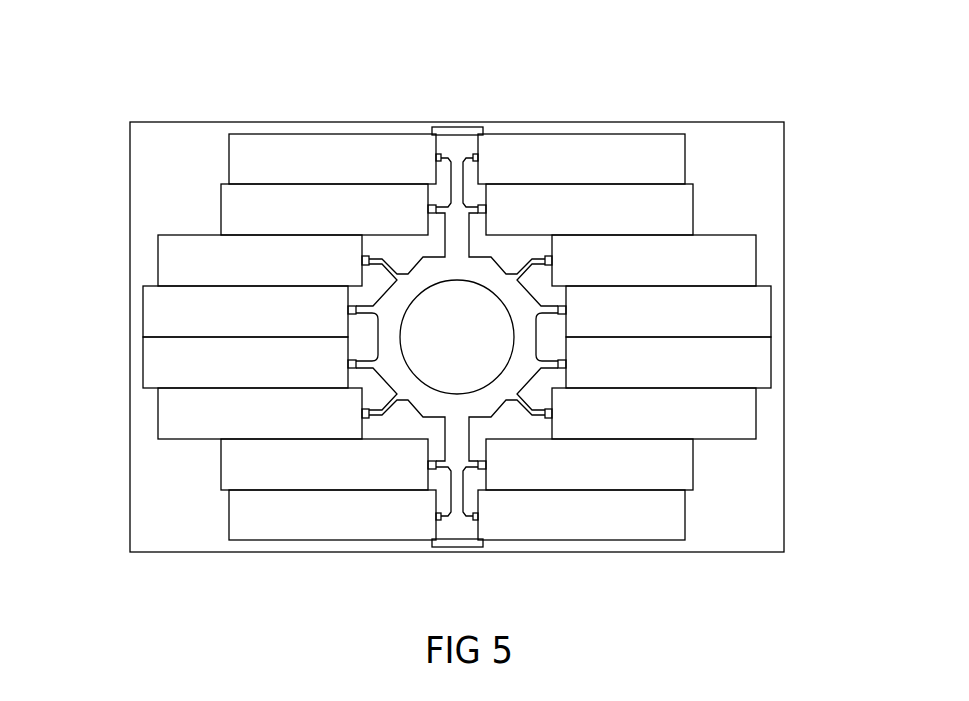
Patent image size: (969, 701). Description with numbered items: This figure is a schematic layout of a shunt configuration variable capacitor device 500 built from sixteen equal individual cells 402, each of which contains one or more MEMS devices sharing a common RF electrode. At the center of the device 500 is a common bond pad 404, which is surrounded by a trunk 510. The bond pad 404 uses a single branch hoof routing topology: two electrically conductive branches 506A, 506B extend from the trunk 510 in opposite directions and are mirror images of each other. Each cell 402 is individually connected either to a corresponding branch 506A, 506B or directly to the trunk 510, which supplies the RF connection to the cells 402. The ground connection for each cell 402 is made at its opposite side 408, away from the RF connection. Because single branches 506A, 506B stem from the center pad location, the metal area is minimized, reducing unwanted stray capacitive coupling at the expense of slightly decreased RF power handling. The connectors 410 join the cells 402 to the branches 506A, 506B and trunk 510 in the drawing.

The shunt configuration variable capacitor device 500 is at (100, 172).
The cell 402 is at (325, 210).
The common bond pad 404 is at (478, 346).
The opposite side 408 is at (143, 353).
The retention clips 410 is at (486, 200).
The branch 506A is at (457, 218).
The branch 506B is at (458, 448).
The trunk 510 is at (517, 365).